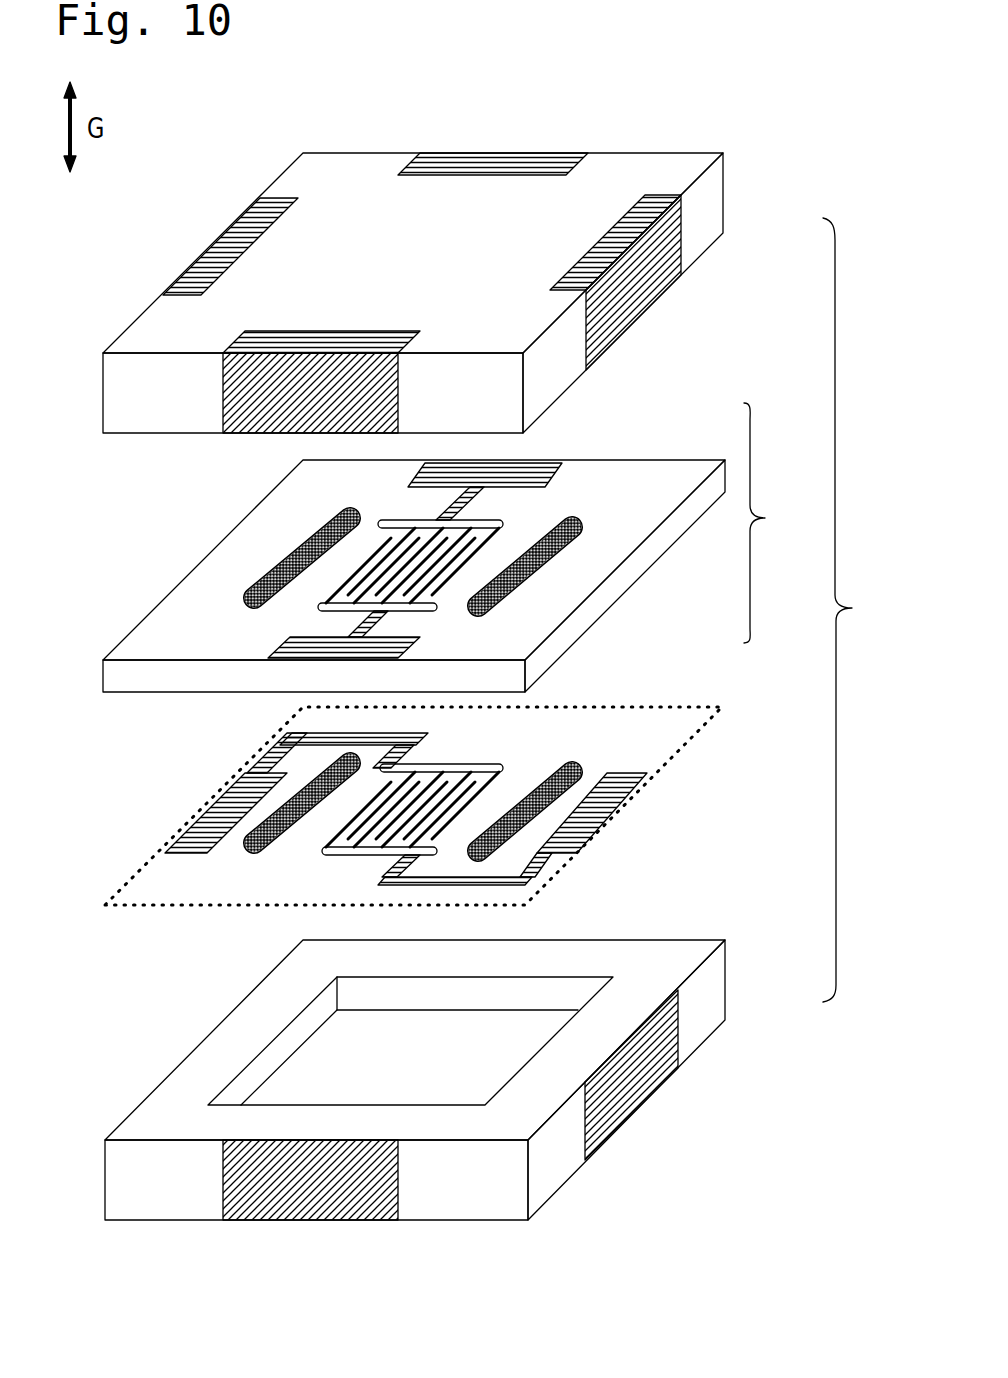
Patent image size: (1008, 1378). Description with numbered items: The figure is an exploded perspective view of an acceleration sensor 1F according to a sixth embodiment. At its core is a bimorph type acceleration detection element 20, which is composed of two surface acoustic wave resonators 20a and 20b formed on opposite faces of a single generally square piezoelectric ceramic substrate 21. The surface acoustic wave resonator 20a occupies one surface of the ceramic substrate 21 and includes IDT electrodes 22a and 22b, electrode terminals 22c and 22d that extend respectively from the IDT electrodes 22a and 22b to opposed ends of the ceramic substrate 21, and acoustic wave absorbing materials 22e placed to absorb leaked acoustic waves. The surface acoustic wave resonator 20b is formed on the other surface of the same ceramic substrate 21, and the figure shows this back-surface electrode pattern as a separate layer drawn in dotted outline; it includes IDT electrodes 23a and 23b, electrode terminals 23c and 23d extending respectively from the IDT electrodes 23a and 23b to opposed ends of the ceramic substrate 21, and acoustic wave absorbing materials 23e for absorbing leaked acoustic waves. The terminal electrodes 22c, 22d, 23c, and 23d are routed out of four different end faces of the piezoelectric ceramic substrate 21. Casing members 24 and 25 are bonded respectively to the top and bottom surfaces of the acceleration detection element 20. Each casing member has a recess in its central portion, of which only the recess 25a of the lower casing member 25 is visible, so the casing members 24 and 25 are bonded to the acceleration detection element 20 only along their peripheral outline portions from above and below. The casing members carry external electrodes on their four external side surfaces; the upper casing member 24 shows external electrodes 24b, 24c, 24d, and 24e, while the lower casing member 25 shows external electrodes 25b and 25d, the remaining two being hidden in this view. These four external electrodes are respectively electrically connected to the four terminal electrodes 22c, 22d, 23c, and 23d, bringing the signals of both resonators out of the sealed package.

The acceleration sensor 1F is at (855, 610).
The acceleration detection element 20 is at (773, 523).
The surface acoustic wave resonator 20a is at (645, 455).
The surface acoustic wave resonator 20b is at (645, 703).
The piezoelectric ceramic substrate 21 is at (421, 545).
The IDT electrode 22a is at (353, 567).
The IDT electrode 22b is at (393, 548).
The electrode terminal 22c is at (278, 647).
The electrode terminal 22d is at (520, 462).
The acoustic wave absorbing material 22e is at (283, 558).
The IDT electrode 23a is at (323, 840).
The IDT electrode 23b is at (432, 787).
The electrode terminal 23c is at (610, 827).
The electrode terminal 23d is at (213, 812).
The acoustic wave absorbing material 23e is at (247, 853).
The casing member 24 is at (290, 170).
The external electrode 24b is at (300, 338).
The external electrode 24c is at (495, 162).
The external electrode 24d is at (630, 307).
The external electrode 24e is at (213, 243).
The casing member 25 is at (440, 1210).
The recess 25a is at (297, 1070).
The external electrode 25b is at (275, 1213).
The external electrode 25d is at (637, 1102).